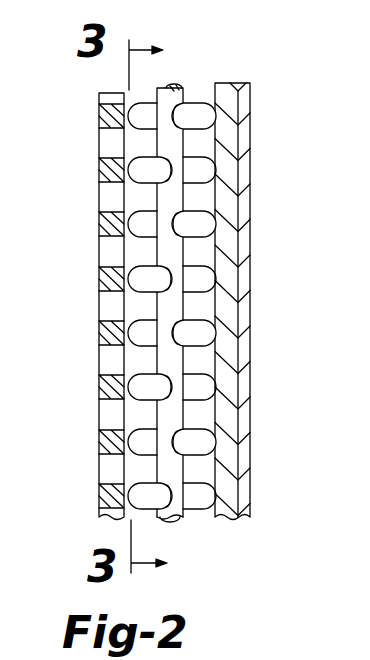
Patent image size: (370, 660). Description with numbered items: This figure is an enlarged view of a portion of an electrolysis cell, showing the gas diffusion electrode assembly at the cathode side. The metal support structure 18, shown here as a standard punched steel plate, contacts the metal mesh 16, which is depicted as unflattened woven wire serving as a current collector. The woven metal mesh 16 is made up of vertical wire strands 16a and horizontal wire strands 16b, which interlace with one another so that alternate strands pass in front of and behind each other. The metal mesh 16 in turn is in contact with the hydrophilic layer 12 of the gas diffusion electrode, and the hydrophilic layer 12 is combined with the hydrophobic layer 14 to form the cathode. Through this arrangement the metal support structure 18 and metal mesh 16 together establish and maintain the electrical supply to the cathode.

The hydrophilic layer 12 is at (229, 85).
The hydrophobic layer 14 is at (252, 177).
The metal mesh 16 is at (179, 84).
The vertical wire strands 16a is at (163, 188).
The horizontal wire strands 16b is at (127, 321).
The metal support structure 18 is at (100, 112).